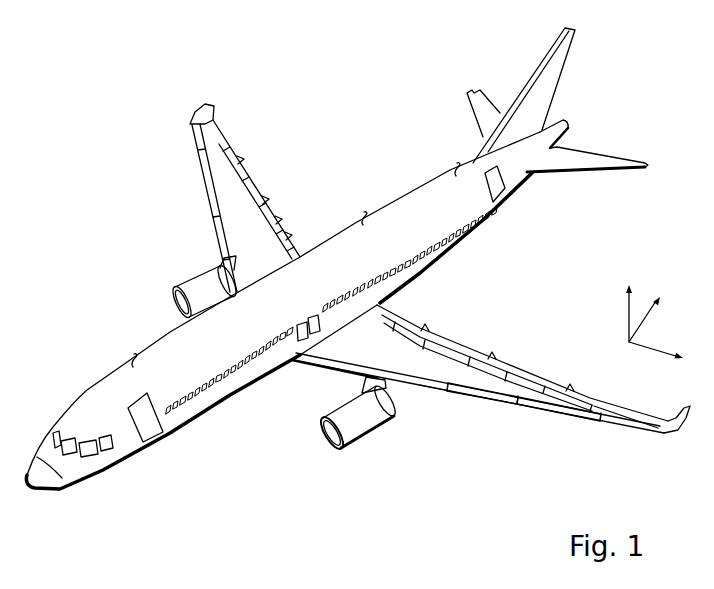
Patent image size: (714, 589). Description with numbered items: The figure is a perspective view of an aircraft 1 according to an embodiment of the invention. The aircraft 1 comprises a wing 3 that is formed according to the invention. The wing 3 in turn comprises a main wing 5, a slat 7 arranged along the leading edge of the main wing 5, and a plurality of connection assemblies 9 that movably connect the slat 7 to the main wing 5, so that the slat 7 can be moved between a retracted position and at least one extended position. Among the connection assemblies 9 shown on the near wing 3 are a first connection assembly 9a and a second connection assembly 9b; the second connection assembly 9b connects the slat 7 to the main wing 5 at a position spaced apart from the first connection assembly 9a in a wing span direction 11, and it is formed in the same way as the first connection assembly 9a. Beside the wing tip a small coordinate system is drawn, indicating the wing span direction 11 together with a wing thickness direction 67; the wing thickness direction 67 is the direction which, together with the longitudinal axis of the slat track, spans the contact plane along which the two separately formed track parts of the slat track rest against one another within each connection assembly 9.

The aircraft 1 is at (358, 258).
The wing 3 is at (440, 294).
The main wing 5 is at (447, 372).
The slat 7 is at (474, 400).
The connection assemblies 9 is at (439, 408).
The first connection assembly 9a is at (459, 409).
The second connection assembly 9b is at (562, 424).
The wing span direction 11 is at (655, 348).
The wing thickness direction 67 is at (661, 302).